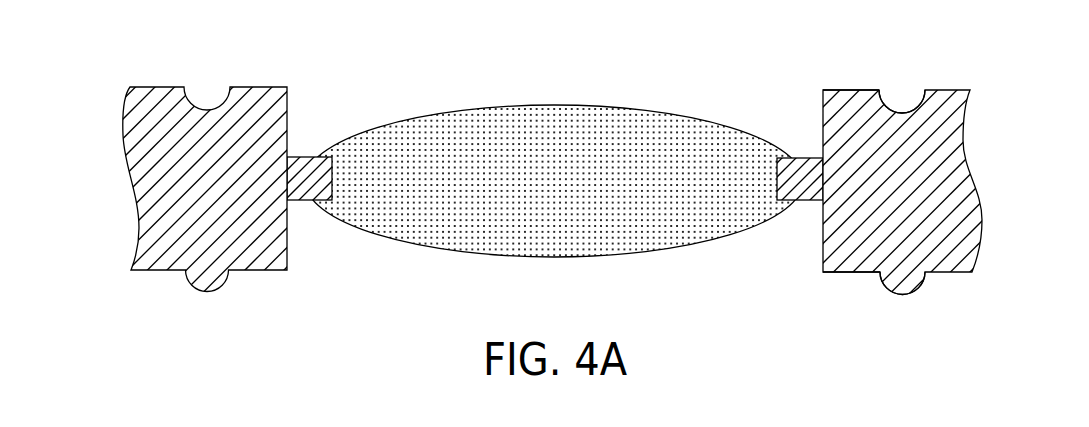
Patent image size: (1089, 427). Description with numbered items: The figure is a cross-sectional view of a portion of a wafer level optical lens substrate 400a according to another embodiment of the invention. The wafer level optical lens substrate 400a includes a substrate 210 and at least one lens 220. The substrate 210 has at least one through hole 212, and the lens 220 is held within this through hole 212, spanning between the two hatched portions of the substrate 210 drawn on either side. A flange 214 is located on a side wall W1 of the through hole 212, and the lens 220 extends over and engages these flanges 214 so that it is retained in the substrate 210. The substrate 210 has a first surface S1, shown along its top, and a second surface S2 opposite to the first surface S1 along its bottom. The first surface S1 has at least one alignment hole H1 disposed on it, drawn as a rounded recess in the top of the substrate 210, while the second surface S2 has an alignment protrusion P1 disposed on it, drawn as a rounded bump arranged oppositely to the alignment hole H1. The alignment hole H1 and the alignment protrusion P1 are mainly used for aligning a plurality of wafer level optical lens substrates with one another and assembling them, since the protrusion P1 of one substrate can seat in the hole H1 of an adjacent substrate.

The substrate 210 is at (957, 113).
The through hole 212 is at (557, 89).
The flange 214 is at (303, 177).
The lens 220 is at (697, 132).
The first surface S1 is at (853, 88).
The second surface S2 is at (852, 274).
The alignment hole H1 is at (902, 100).
The alignment protrusion P1 is at (900, 287).
The side wall W1 is at (289, 236).
The wafer level optical lens substrate 400a is at (1042, 346).